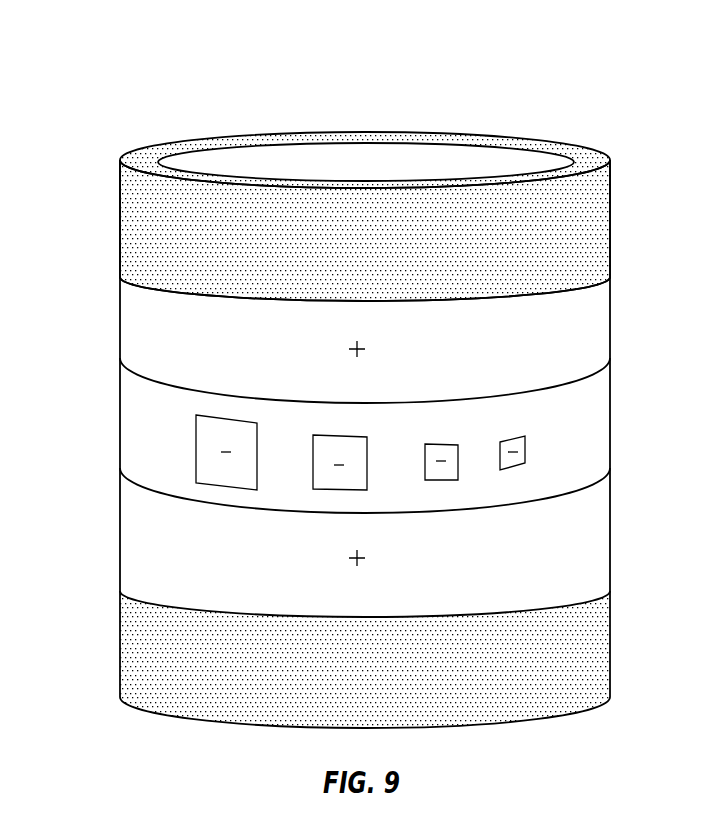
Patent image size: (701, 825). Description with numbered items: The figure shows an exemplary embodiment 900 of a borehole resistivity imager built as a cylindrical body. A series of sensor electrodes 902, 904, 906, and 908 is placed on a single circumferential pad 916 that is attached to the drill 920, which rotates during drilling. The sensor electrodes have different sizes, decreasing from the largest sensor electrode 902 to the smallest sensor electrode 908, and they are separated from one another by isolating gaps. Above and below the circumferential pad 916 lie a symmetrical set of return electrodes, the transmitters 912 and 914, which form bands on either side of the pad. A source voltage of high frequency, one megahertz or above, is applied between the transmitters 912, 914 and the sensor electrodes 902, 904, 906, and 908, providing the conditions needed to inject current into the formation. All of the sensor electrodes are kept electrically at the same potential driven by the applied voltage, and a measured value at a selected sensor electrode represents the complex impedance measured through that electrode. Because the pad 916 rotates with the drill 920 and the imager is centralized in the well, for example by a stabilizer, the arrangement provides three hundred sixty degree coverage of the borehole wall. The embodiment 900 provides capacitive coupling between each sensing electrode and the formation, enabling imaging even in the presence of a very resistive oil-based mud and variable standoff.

The exemplary embodiment 900 is at (120, 68).
The drill 920 is at (600, 240).
The transmitter 912 is at (598, 323).
The circumferential pad 916 is at (600, 420).
The transmitter 914 is at (600, 528).
The sensor electrode 902 is at (197, 418).
The sensor electrode 904 is at (337, 435).
The sensor electrode 906 is at (432, 443).
The sensor electrode 908 is at (506, 441).